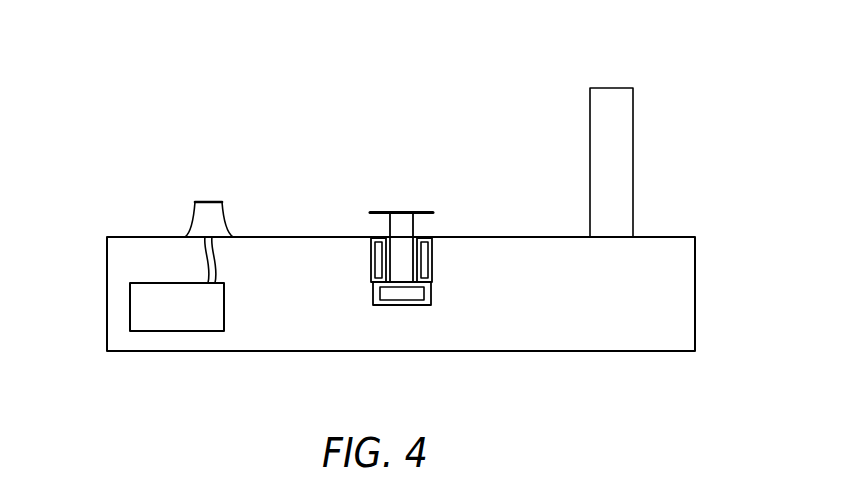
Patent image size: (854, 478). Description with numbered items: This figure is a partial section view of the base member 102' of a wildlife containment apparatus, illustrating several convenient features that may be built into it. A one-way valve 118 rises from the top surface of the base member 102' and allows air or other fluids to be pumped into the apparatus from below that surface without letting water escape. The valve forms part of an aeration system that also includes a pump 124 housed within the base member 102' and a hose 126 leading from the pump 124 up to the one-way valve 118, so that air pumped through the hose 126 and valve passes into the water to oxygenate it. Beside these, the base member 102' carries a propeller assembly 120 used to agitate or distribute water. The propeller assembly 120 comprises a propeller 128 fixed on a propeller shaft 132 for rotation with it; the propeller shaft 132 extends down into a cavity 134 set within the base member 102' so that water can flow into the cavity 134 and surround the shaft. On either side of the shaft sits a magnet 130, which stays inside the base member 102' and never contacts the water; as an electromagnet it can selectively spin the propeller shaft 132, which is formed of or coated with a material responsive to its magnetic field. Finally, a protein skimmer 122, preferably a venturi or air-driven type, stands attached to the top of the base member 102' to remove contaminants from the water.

The base member 102' is at (401, 183).
The one-way valve 118 is at (208, 172).
The propeller assembly 120 is at (403, 240).
The protein skimmer 122 is at (572, 85).
The pump 124 is at (130, 314).
The hose 126 is at (203, 248).
The propeller 128 is at (420, 212).
The magnet 130 is at (372, 259).
The propeller shaft 132 is at (403, 276).
The cavity 134 is at (428, 301).